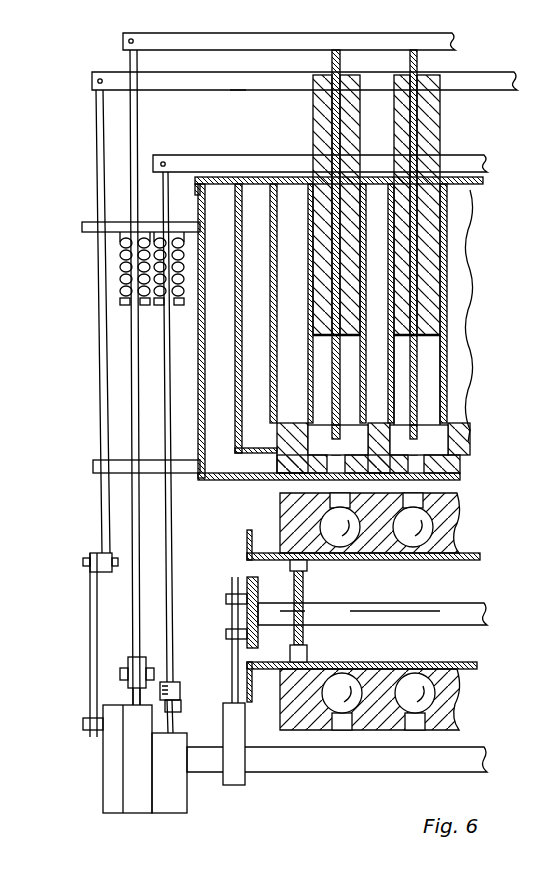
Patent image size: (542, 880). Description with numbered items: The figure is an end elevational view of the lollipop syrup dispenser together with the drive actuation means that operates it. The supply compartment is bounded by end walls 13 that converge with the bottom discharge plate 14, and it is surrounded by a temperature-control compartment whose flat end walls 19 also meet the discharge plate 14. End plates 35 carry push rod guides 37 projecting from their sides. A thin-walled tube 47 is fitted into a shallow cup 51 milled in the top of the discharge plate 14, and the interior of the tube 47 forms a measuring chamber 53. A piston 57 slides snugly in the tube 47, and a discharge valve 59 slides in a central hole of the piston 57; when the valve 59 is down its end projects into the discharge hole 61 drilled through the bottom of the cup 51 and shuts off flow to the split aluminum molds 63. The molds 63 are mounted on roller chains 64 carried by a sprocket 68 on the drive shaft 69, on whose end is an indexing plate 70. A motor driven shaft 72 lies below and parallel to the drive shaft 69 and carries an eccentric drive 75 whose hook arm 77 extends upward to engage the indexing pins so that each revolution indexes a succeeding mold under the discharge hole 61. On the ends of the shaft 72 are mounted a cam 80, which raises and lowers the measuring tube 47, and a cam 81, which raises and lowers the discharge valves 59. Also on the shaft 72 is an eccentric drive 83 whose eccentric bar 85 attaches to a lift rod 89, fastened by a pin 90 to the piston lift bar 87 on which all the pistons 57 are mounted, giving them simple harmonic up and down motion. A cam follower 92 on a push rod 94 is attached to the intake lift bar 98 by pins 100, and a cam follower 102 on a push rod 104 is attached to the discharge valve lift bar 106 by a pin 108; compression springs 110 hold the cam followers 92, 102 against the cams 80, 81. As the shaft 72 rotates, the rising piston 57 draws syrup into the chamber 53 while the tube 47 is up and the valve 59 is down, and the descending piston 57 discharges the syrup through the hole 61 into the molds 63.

The end walls 13 is at (278, 306).
The bottom discharge plate 14 is at (290, 456).
The flat end walls 19 is at (236, 366).
The end plates 35 is at (199, 397).
The push rod guides 37 is at (88, 233).
The thin-walled tube 47 is at (376, 244).
The shallow cup 51 is at (446, 447).
The measuring chamber 53 is at (430, 382).
The piston 57 is at (314, 126).
The discharge valve 59 is at (410, 137).
The discharge hole 61 is at (328, 479).
The split aluminum molds 63 is at (454, 524).
The roller chains 64 is at (476, 560).
The sprocket 68 is at (304, 586).
The drive shaft 69 is at (424, 621).
The indexing plate 70 is at (248, 561).
The motor driven shaft 72 is at (226, 632).
The eccentric drive 75 is at (245, 781).
The hook arm 77 is at (232, 666).
The cam 80 is at (181, 803).
The cam 81 is at (134, 803).
The eccentric drive 83 is at (103, 781).
The eccentric bar 85 is at (102, 369).
The piston lift bar 87 is at (238, 90).
The lift rod 89 is at (94, 656).
The pin 90 is at (100, 81).
The cam follower 92 is at (180, 700).
The push rod 94 is at (170, 506).
The intake lift bar 98 is at (176, 157).
The pins 100 is at (163, 162).
The cam follower 102 is at (127, 658).
The push rod 104 is at (132, 504).
The discharge valve lift bar 106 is at (262, 33).
The pin 108 is at (131, 41).
The compression springs 110 is at (155, 235).